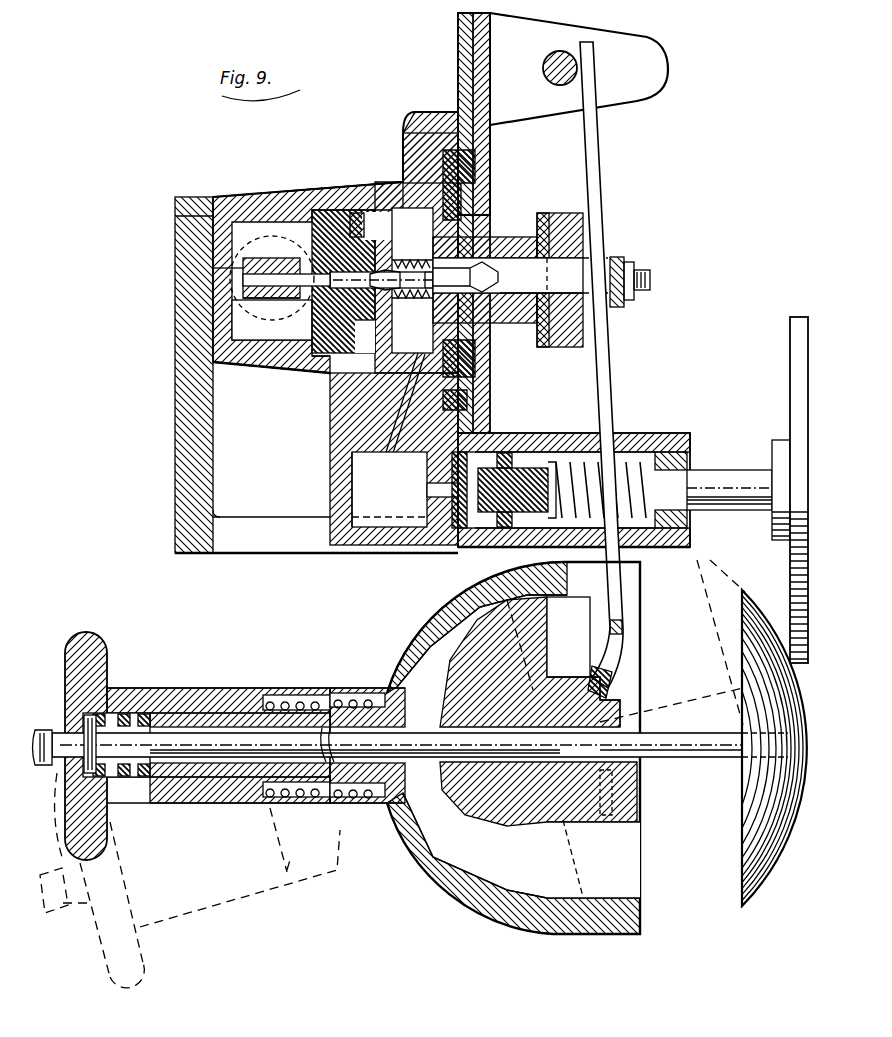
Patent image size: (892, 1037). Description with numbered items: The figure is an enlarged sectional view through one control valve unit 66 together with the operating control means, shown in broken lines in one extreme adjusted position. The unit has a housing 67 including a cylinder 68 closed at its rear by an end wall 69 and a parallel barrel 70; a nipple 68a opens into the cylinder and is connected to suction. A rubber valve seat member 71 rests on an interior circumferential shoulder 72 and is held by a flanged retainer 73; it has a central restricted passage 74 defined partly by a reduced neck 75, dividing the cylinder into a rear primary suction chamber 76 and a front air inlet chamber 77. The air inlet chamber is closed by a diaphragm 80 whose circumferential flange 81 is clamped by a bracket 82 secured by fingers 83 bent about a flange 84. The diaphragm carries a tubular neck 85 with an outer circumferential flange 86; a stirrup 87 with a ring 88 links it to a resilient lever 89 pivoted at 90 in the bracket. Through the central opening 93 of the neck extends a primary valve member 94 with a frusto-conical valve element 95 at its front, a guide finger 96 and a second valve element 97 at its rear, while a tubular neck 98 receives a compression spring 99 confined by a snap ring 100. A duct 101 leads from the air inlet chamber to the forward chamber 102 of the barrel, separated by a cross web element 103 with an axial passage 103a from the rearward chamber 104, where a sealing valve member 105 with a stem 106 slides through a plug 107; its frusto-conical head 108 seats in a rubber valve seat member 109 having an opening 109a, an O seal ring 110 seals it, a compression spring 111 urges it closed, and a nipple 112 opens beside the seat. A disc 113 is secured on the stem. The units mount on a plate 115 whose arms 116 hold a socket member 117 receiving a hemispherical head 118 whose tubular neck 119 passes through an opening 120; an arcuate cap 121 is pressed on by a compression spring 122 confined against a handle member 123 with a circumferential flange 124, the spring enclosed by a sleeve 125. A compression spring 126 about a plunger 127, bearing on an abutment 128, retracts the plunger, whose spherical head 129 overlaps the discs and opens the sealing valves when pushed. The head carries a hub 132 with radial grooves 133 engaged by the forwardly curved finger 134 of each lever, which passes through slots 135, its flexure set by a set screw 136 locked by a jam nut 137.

The control valve unit 66 is at (290, 162).
The housing 67 is at (323, 181).
The cylinder 68 is at (240, 196).
The nipple 68a is at (287, 196).
The end wall 69 is at (190, 228).
The barrel 70 is at (370, 540).
The valve seat member 71 is at (330, 372).
The interior circumferential shoulder 72 is at (283, 375).
The flanged retainer 73 is at (358, 208).
The central restricted passage 74 is at (288, 258).
The reduced neck 75 is at (215, 268).
The primary suction chamber 76 is at (247, 330).
The air inlet chamber 77 is at (400, 188).
The diaphragm 80 is at (470, 198).
The circumferential flange 81 is at (482, 166).
The bracket 82 is at (458, 30).
The fingers 83 is at (430, 112).
The flange 84 is at (420, 135).
The neck 85 is at (508, 237).
The outer circumferential flange 86 is at (570, 236).
The stirrup 87 is at (614, 256).
The ring 88 is at (540, 212).
The lever 89 is at (598, 163).
The pivot 90 is at (546, 78).
The central opening 93 is at (488, 308).
The primary valve member 94 is at (408, 270).
The frusto-conical valve element 95 is at (518, 318).
The finger 96 is at (302, 300).
The frusto-conical valve element 97 is at (372, 252).
The tubular neck 98 is at (428, 320).
The compression spring 99 is at (425, 298).
The snap ring 100 is at (372, 312).
The duct 101 is at (383, 413).
The forward chamber 102 is at (362, 470).
The cross web element 103 is at (433, 464).
The axial passage 103a is at (433, 490).
The rearward chamber 104 is at (562, 458).
The sealing valve member 105 is at (536, 444).
The stem 106 is at (720, 488).
The plug 107 is at (690, 517).
The frusto-conical head 108 is at (497, 452).
The valve seat member 109 is at (457, 545).
The opening 109a is at (403, 548).
The O seal ring 110 is at (492, 466).
The compression spring 111 is at (645, 436).
The nipple 112 is at (458, 532).
The disc 113 is at (793, 340).
The mounting plate 115 is at (188, 430).
The arms 116 is at (284, 542).
The socket member 117 is at (578, 932).
The hemispherical head 118 is at (517, 872).
The tubular neck 119 is at (357, 802).
The opening 120 is at (403, 858).
The arcuate cap 121 is at (430, 882).
The compression spring 122 is at (307, 802).
The handle member 123 is at (243, 798).
The circumferential flange 124 is at (87, 667).
The sleeve 125 is at (320, 690).
The compression spring 126 is at (128, 713).
The plunger 127 is at (186, 740).
The abutment 128 is at (86, 738).
The spherical head 129 is at (743, 843).
The hub 132 is at (560, 677).
The radial grooves 133 is at (620, 707).
The forwardly curved finger 134 is at (622, 647).
The slots 135 is at (583, 578).
The set screw 136 is at (652, 282).
The jam nut 137 is at (630, 262).